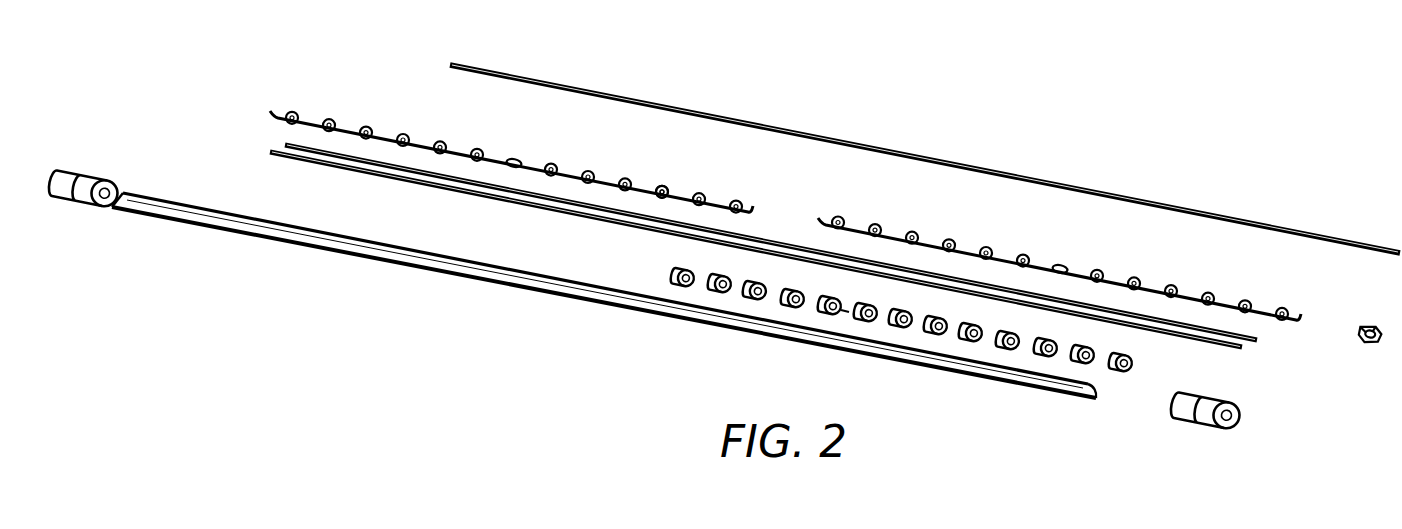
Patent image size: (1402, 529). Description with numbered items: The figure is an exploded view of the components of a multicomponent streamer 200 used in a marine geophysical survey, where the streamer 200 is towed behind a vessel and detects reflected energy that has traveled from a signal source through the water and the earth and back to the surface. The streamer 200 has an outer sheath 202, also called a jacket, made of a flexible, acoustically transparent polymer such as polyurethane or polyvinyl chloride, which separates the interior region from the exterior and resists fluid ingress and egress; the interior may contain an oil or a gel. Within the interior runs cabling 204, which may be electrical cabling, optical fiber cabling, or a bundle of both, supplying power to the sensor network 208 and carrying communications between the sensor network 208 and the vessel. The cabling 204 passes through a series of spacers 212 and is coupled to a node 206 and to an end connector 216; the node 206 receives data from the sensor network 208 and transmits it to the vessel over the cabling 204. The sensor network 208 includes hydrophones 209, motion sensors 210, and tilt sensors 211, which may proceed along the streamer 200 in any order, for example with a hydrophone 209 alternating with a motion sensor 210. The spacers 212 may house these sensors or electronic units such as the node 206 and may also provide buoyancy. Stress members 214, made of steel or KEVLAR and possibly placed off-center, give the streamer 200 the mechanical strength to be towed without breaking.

The streamer 200 is at (1060, 116).
The outer sheath 202 is at (384, 262).
The cabling 204 is at (768, 126).
The node 206 is at (1371, 346).
The sensor network 208 is at (291, 101).
The hydrophone 209 is at (586, 172).
The motion sensor 210 is at (660, 186).
The tilt sensor 211 is at (513, 160).
The spacers 212 is at (1118, 371).
The stress members 214 is at (367, 172).
The end connector 216 is at (82, 172).